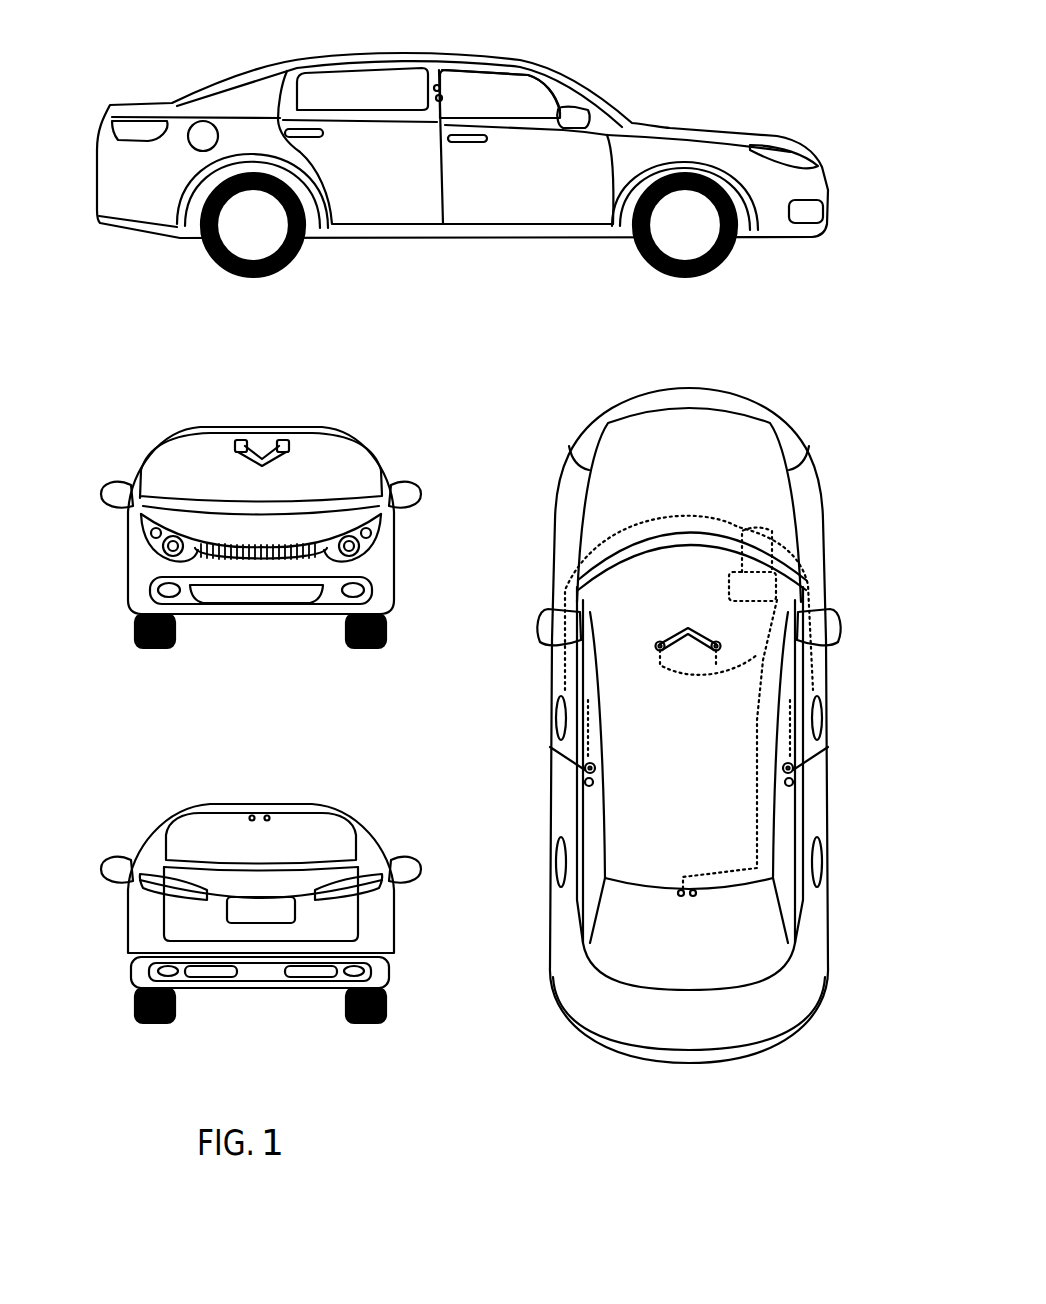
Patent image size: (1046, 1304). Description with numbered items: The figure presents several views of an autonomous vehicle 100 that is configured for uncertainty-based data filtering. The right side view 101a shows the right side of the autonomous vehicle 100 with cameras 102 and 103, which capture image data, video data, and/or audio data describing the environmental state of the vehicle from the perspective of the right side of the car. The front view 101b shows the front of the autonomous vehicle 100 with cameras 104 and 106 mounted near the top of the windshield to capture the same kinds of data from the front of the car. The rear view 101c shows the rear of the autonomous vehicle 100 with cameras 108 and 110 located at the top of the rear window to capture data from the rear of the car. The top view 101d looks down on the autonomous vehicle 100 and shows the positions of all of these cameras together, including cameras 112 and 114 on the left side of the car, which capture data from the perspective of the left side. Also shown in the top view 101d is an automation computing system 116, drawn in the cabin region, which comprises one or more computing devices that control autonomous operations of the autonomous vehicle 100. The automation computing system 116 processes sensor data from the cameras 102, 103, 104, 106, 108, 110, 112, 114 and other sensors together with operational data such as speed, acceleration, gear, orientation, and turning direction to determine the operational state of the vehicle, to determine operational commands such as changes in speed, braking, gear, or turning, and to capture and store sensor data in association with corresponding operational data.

The autonomous vehicle 100 is at (501, 537).
The right side view 101a is at (488, 414).
The front view 101b is at (397, 418).
The rear view 101c is at (364, 799).
The top view 101d is at (704, 725).
The camera 102 is at (442, 98).
The camera 103 is at (440, 87).
The camera 104 is at (237, 440).
The camera 106 is at (282, 440).
The camera 108 is at (252, 818).
The camera 110 is at (267, 818).
The camera 112 is at (590, 775).
The camera 114 is at (592, 790).
The automation computing system 116 is at (758, 572).